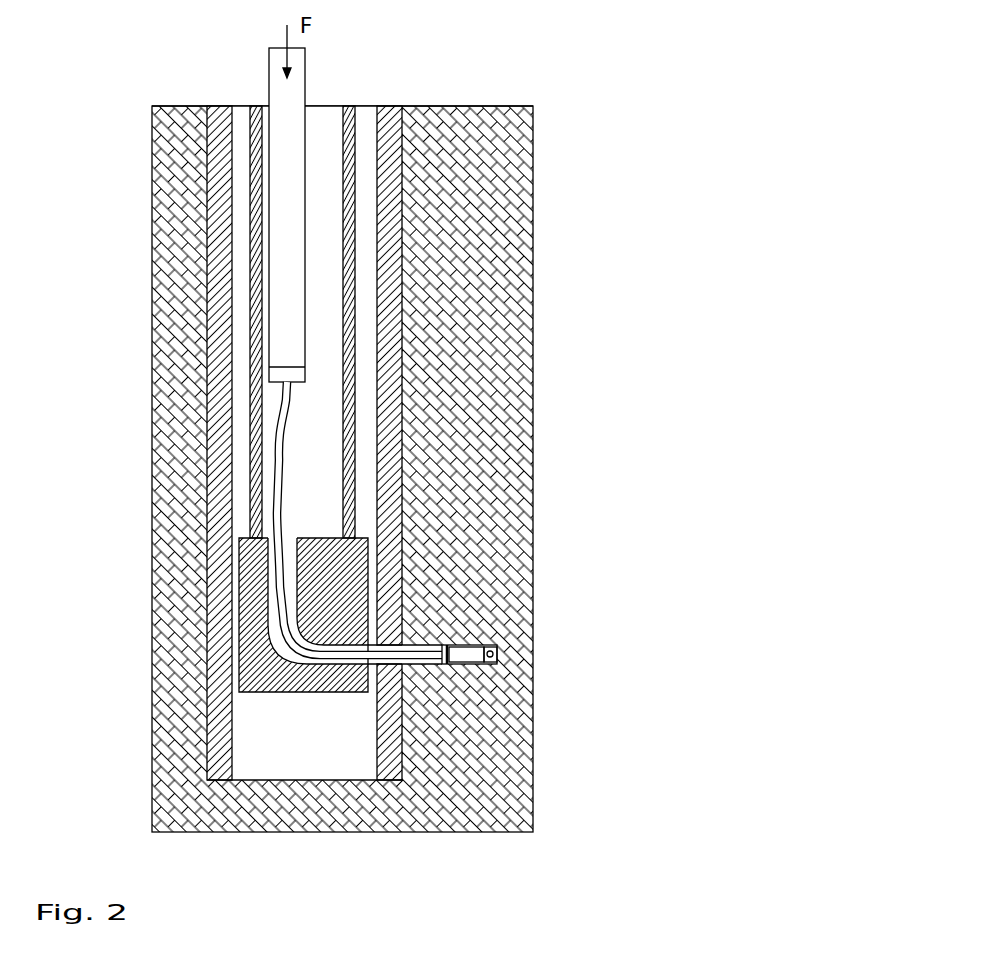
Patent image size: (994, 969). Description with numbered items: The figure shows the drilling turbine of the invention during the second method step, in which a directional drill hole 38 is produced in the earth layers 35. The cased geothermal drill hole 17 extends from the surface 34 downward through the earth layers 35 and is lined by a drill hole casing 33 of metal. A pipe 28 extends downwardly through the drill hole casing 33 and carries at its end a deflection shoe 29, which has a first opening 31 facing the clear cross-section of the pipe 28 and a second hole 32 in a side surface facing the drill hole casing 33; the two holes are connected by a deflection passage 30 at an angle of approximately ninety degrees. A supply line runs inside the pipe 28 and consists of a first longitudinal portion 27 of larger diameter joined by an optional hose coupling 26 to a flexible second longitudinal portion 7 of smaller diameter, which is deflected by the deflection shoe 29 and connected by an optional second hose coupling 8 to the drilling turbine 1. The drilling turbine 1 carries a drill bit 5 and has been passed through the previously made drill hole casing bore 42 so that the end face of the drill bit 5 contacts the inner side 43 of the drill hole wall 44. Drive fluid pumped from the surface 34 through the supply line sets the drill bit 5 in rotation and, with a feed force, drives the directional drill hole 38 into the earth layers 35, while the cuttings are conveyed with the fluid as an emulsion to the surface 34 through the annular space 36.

The drilling turbine 1 is at (460, 657).
The drill bit 5 is at (500, 654).
The second longitudinal portion 7 is at (286, 426).
The second hose coupling 8 is at (457, 653).
The geothermal drill hole 17 is at (353, 760).
The hose coupling 26 is at (298, 374).
The first longitudinal portion 27 is at (295, 142).
The pipe 28 is at (353, 177).
The deflection shoe 29 is at (352, 555).
The deflection passage 30 is at (272, 608).
The first opening 31 is at (288, 538).
The second hole 32 is at (367, 667).
The drill hole casing 33 is at (393, 210).
The surface 34 is at (430, 106).
The earth layers 35 is at (402, 805).
The annular space 36 is at (420, 662).
The directional drill hole 38 is at (430, 642).
The drill hole casing bore 42 is at (382, 642).
The inner side 43 is at (392, 290).
The drill hole wall 44 is at (403, 315).